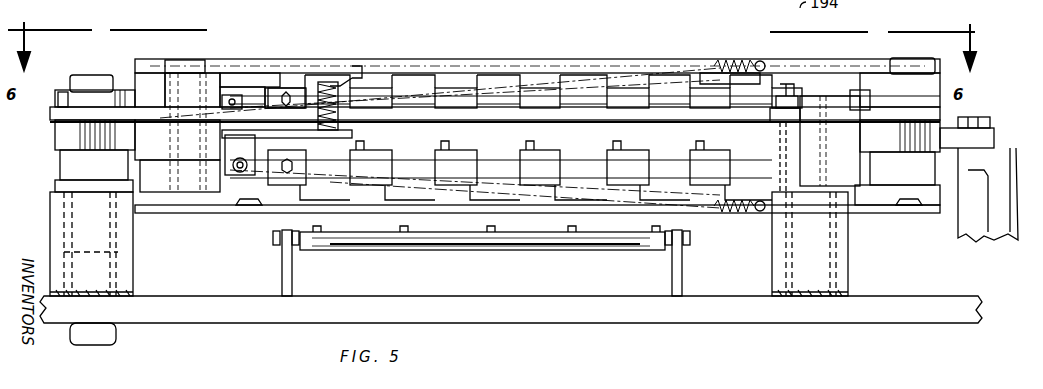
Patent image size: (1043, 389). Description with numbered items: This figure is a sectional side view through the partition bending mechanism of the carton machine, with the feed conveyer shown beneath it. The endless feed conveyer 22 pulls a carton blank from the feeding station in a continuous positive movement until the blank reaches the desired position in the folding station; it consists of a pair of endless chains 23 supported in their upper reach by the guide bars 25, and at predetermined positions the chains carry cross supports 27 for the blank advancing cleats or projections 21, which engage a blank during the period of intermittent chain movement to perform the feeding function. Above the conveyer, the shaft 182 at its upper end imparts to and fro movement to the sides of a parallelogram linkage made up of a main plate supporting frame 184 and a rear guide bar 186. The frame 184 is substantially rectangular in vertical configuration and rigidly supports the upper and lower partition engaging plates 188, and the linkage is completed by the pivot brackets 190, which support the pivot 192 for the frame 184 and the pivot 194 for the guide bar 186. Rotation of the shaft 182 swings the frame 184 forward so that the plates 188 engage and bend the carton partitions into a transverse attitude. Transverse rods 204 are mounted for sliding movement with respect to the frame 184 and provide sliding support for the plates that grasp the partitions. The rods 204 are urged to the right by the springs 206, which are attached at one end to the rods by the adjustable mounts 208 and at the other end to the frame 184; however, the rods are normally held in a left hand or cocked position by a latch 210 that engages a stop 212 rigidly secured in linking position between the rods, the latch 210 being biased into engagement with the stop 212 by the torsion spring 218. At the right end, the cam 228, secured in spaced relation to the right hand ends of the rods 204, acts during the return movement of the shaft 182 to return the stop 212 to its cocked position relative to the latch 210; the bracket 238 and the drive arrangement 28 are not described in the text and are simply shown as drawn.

The blank advancing cleats or projections 21 is at (480, 234).
The endless feed conveyer 22 is at (244, 239).
The endless chains 23 is at (274, 236).
The guide bars 25 is at (292, 270).
The cross supports 27 is at (590, 250).
The drive mechanism 28 is at (690, 55).
The shaft 182 is at (92, 80).
The main plate supporting frame 184 is at (466, 70).
The rear guide bar 186 is at (488, 120).
The partition engaging plates 188 is at (375, 136).
The pivot brackets 190 is at (60, 138).
The pivot 192 is at (896, 66).
The pivot 194 is at (782, 95).
The transverse rods 204 is at (582, 160).
The springs 206 is at (588, 70).
The adjustable mounts 208 is at (276, 100).
The latch 210 is at (244, 160).
The stop 212 is at (232, 100).
The torsion spring 218 is at (360, 70).
The cam 228 is at (985, 132).
The bracket 238 is at (978, 232).